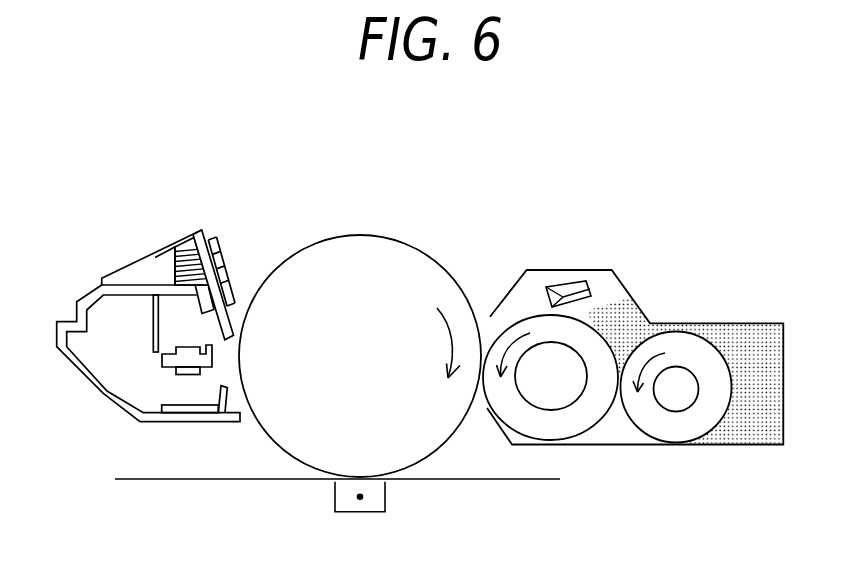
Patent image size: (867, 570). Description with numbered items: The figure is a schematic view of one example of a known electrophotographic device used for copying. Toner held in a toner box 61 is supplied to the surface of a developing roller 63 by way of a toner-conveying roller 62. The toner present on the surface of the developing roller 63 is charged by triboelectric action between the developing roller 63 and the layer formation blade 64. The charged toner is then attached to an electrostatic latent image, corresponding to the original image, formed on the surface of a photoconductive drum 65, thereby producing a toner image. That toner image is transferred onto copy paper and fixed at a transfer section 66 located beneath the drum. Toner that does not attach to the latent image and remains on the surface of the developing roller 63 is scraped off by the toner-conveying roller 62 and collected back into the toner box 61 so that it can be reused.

The toner box 61 is at (753, 323).
The toner-conveying roller 62 is at (682, 348).
The developing roller 63 is at (526, 328).
The layer formation blade 64 is at (582, 282).
The photoconductive drum 65 is at (359, 252).
The transfer section 66 is at (378, 499).